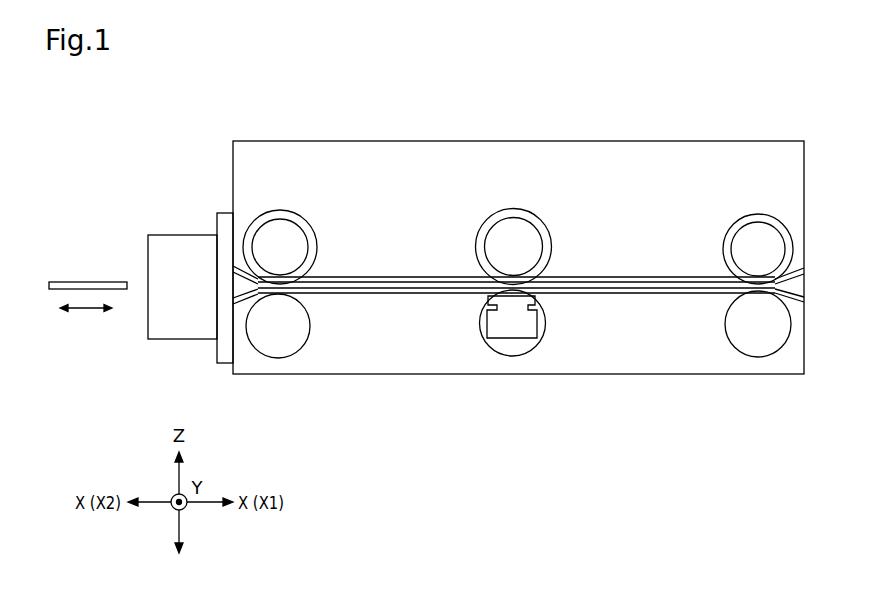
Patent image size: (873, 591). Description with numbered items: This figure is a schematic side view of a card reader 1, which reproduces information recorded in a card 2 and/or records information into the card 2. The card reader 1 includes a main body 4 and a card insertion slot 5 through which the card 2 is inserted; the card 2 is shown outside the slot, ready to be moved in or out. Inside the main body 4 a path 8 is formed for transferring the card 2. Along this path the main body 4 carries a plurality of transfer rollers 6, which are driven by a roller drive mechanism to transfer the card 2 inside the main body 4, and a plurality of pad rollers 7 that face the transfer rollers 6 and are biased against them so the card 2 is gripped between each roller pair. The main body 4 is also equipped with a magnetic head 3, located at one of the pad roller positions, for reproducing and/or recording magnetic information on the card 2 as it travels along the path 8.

The card reader 1 is at (216, 104).
The card 2 is at (89, 282).
The magnetic head 3 is at (537, 322).
The main body 4 is at (281, 141).
The card insertion slot 5 is at (183, 235).
The transfer rollers 6 is at (279, 210).
The pad rollers 7 is at (311, 322).
The path 8 is at (627, 288).